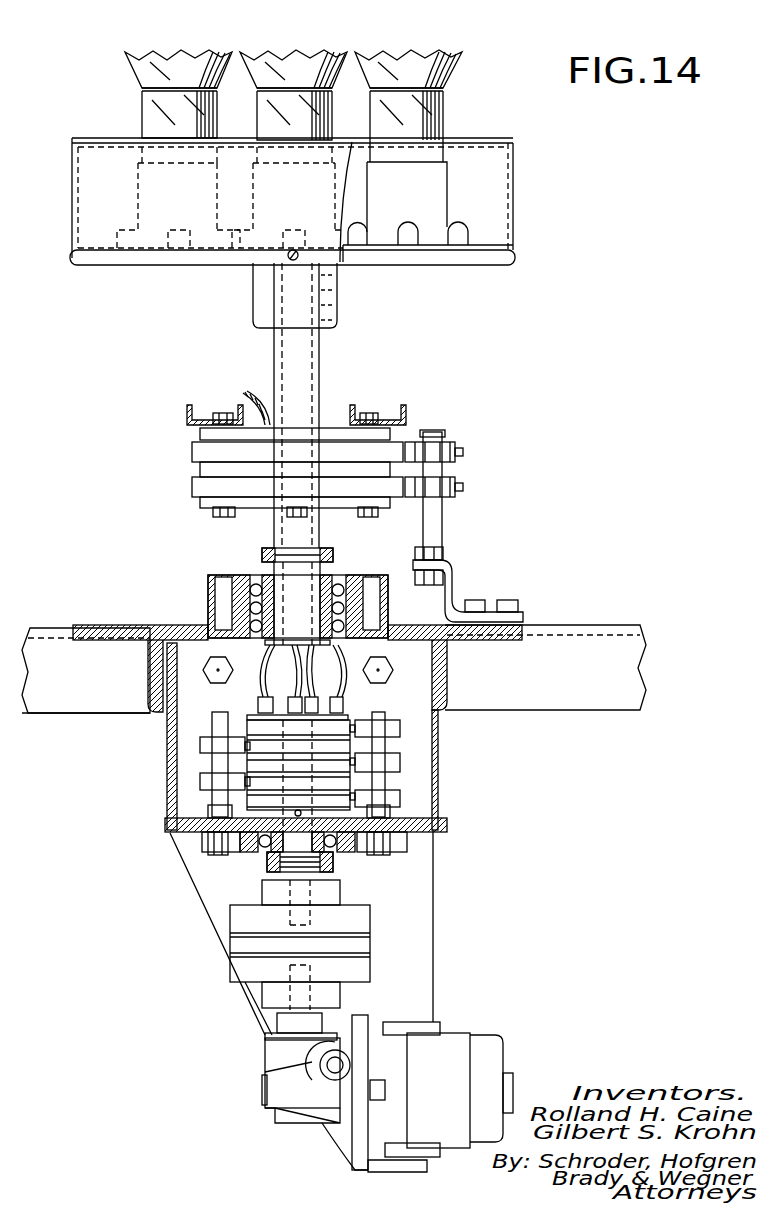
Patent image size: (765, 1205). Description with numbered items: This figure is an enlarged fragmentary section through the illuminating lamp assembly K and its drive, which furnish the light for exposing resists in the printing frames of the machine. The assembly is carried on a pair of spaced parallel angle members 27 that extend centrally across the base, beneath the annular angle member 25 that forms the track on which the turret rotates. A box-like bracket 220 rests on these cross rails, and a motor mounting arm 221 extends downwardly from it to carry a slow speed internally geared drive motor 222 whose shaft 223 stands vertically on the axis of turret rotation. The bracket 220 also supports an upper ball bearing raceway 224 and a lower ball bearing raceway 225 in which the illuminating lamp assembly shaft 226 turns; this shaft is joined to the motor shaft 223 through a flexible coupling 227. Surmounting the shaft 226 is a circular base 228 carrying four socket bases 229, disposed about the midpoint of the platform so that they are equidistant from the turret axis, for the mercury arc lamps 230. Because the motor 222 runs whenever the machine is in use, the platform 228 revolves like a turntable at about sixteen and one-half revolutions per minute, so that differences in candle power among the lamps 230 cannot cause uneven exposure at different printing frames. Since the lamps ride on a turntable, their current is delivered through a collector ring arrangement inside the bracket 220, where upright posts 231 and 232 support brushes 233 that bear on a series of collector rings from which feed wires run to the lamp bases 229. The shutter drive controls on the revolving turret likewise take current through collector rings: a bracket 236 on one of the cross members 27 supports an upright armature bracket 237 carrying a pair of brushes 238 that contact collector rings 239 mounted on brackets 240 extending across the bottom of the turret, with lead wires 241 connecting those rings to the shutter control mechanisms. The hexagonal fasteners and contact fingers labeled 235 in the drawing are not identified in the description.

The mercury arc lamp 230 is at (142, 86).
The circular base 228 is at (490, 140).
The socket base 229 is at (450, 195).
The lead wire 241 is at (243, 395).
The bracket 240 is at (187, 410).
The illuminating lamp assembly K is at (440, 408).
The collector ring 239 is at (192, 450).
The brush 238 is at (462, 452).
The upright armature bracket 237 is at (442, 530).
The bracket 236 is at (452, 572).
The illuminating lamp assembly shaft 226 is at (319, 534).
The upper ball bearing raceway 224 is at (245, 575).
The box-like bracket 220 is at (180, 626).
The angle member 27 is at (148, 660).
The annular angle member 25 is at (93, 706).
The contact finger 235 is at (262, 680).
The upright post 231 is at (212, 725).
The upright post 232 is at (400, 718).
The brush 233 is at (200, 745).
The lower ball bearing raceway 225 is at (345, 860).
The motor mounting arm 221 is at (433, 893).
The flexible coupling 227 is at (370, 920).
The drive motor 222 is at (455, 1033).
The motor shaft 223 is at (277, 1025).